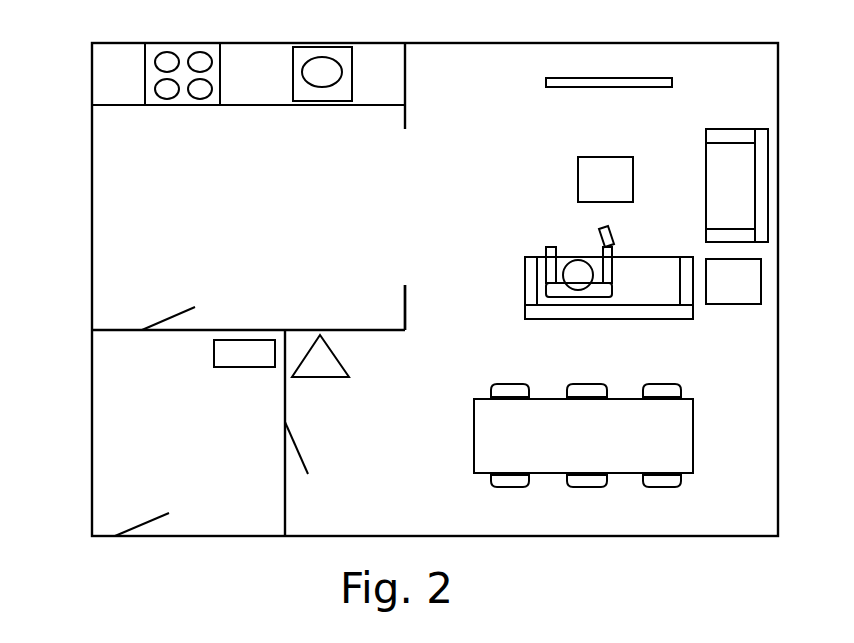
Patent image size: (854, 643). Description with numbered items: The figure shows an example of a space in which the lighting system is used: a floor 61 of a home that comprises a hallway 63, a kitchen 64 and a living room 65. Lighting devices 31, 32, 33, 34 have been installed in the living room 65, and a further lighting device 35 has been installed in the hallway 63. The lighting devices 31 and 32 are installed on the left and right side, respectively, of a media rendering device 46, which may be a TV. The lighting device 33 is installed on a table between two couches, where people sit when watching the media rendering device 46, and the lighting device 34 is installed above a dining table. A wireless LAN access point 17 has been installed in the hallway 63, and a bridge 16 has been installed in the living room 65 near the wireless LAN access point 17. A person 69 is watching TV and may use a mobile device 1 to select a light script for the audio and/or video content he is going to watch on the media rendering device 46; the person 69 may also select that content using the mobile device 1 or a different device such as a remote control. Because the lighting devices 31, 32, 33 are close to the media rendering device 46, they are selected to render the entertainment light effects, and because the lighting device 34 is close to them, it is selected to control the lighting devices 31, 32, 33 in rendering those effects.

The mobile device 1 is at (610, 228).
The bridge 16 is at (311, 375).
The wireless LAN access point 17 is at (233, 365).
The lighting device 31 is at (304, 74).
The lighting device 32 is at (646, 190).
The lighting device 33 is at (733, 281).
The lighting device 34 is at (583, 435).
The lighting device 35 is at (187, 433).
The media rendering device 46 is at (613, 78).
The floor 61 is at (92, 125).
The hallway 63 is at (145, 333).
The kitchen 64 is at (386, 307).
The living room 65 is at (302, 476).
The person 69 is at (560, 297).